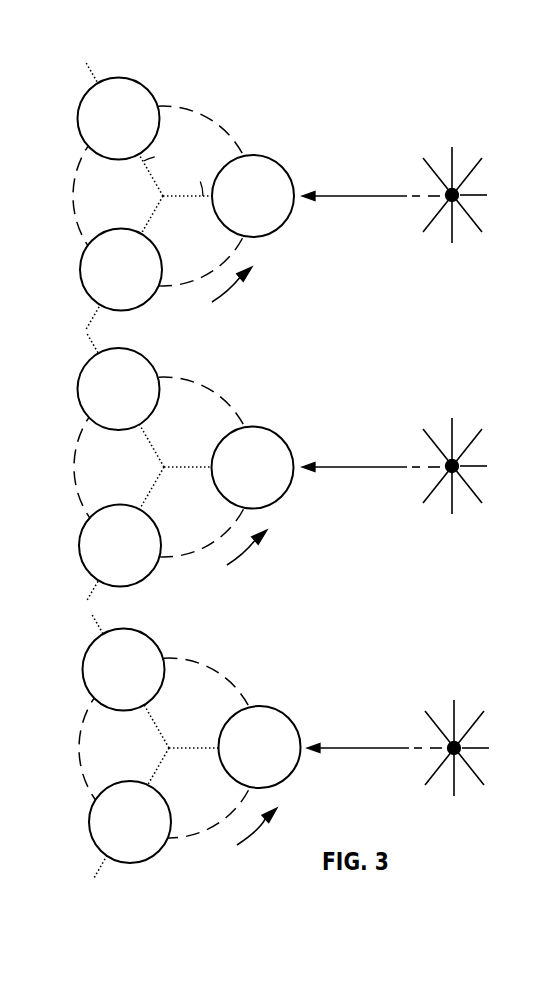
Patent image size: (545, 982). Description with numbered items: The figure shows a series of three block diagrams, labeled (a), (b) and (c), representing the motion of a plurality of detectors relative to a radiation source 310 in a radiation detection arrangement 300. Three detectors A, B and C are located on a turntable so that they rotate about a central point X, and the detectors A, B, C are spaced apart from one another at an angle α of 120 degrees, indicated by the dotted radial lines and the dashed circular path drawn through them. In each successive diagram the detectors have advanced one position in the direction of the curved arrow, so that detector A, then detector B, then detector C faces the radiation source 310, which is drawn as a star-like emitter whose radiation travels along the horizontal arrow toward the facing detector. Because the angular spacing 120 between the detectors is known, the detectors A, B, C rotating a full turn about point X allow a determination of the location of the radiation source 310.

The rotating target arrangement 300 is at (290, 470).
The radiation source 310 is at (453, 192).
The angular spacing alpha 120 is at (173, 164).
The detector A is at (186, 509).
The detector B is at (187, 470).
The detector C is at (189, 433).